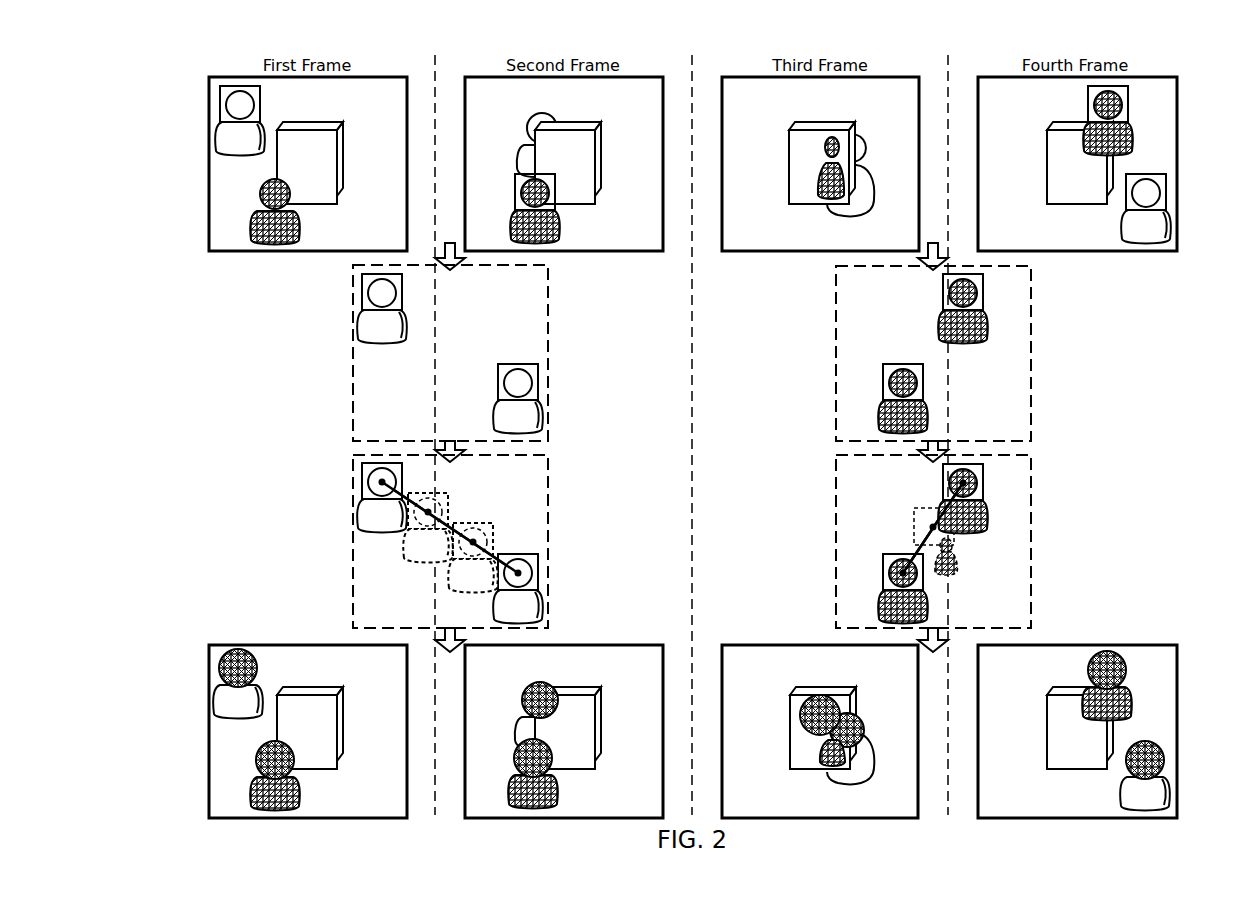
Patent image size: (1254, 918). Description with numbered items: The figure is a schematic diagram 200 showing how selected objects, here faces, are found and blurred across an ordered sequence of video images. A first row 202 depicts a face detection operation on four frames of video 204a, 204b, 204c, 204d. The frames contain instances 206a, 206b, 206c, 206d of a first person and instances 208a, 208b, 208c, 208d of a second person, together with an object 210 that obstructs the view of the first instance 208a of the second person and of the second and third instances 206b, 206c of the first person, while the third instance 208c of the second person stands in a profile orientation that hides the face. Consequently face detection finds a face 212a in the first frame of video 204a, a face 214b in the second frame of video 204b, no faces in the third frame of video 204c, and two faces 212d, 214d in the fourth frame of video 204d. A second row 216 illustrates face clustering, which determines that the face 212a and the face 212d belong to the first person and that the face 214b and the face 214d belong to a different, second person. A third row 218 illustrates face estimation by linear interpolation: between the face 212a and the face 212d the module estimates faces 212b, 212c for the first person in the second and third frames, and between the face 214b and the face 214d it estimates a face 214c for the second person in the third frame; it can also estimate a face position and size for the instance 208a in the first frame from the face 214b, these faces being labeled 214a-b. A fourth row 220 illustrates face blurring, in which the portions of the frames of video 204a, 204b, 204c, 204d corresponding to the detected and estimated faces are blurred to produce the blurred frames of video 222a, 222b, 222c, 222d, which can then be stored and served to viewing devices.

The schematic diagram 200 is at (125, 102).
The first row 202 is at (131, 223).
The first frame of video 204a is at (362, 244).
The second frame of video 204b is at (618, 244).
The third frame of video 204c is at (875, 244).
The fourth frame of video 204d is at (1079, 244).
The first instance of the first person 206a is at (218, 130).
The second instance of the first person 206b is at (528, 117).
The third instance of the first person 206c is at (860, 157).
The fourth instance of the first person 206d is at (1168, 222).
The first instance of the second person 208a is at (257, 210).
The second instance of the second person 208b is at (558, 228).
The third instance of the second person 208c is at (818, 165).
The fourth instance of the second person 208d is at (1130, 130).
The object 210 is at (305, 198).
The face of the first person in the first frame 212a is at (260, 102).
The estimated face of the first person in the second frame 212b is at (448, 512).
The estimated face of the first person in the third frame 212c is at (493, 540).
The face of the first person in the fourth frame 212d is at (1166, 192).
The faces of the second person in the first and second frames 214a-b is at (883, 576).
The face of the second person in the second frame 214b is at (513, 157).
The estimated face of the second person in the third frame 214c is at (914, 530).
The face of the second person in the fourth frame 214d is at (1087, 105).
The second row 216 is at (220, 358).
The third row 218 is at (220, 541).
The fourth row 220 is at (131, 661).
The first blurred frame of video 222a is at (362, 810).
The second blurred frame of video 222b is at (618, 810).
The third blurred frame of video 222c is at (875, 810).
The fourth blurred frame of video 222d is at (1079, 810).